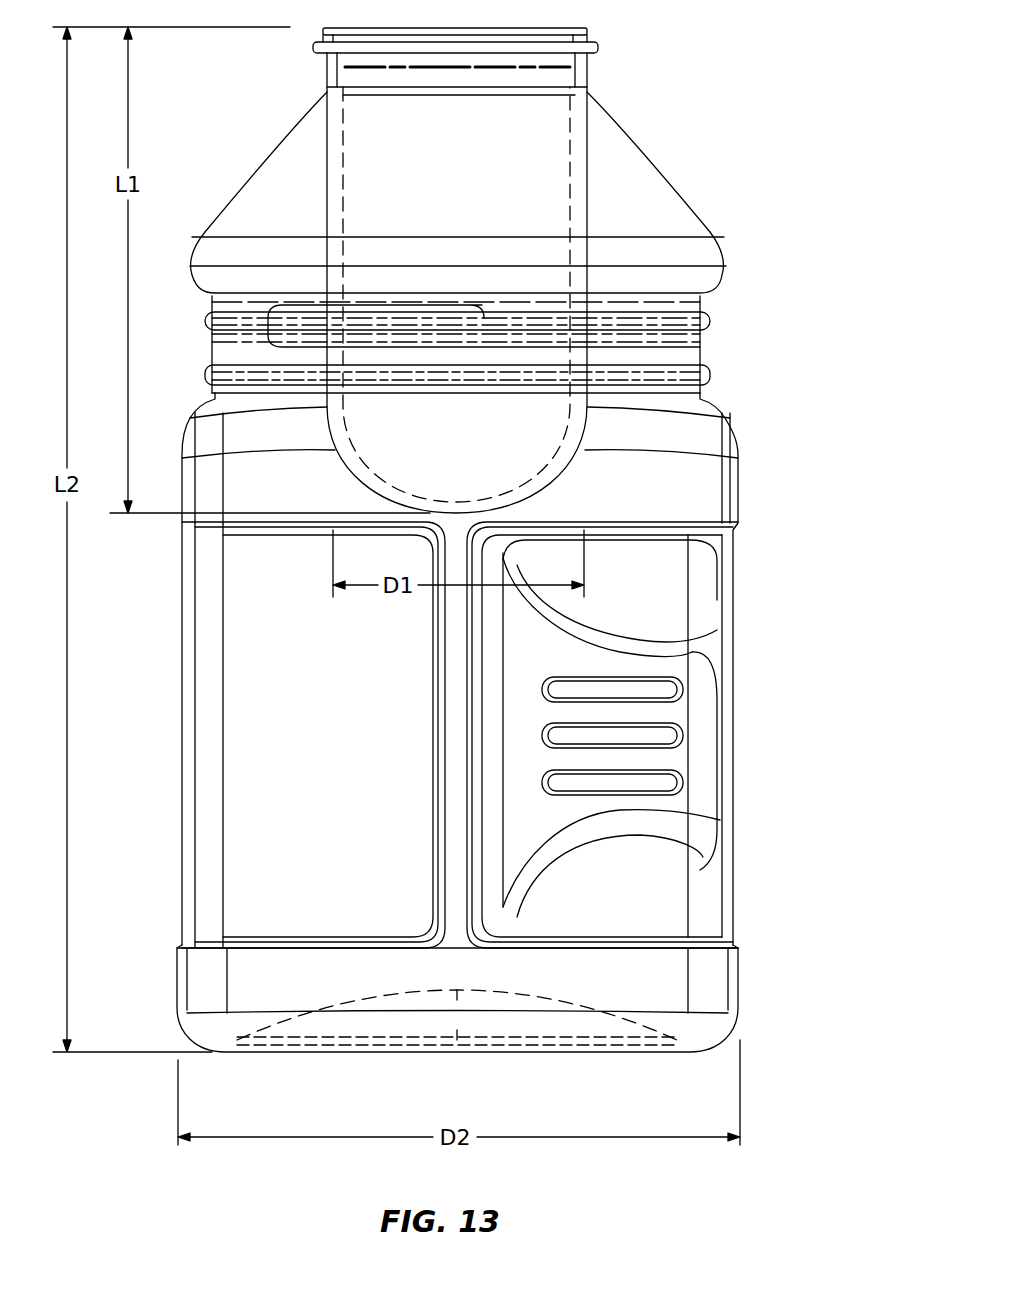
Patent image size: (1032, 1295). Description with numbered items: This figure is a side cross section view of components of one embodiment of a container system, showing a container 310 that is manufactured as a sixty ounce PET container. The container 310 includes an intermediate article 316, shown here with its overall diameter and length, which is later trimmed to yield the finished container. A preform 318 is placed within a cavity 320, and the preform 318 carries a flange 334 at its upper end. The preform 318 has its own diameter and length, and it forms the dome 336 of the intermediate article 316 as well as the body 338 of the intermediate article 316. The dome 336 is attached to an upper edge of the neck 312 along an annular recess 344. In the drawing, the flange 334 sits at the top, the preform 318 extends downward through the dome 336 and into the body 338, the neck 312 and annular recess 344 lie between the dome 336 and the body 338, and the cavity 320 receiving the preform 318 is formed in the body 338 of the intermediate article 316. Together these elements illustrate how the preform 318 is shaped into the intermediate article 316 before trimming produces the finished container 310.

The container 310 is at (854, 86).
The flange 334 is at (600, 47).
The preform 318 is at (588, 135).
The dome 336 is at (273, 193).
The annular recess 344 is at (696, 310).
The neck 312 is at (696, 321).
The body 338 is at (202, 690).
The cavity 320 is at (663, 593).
The intermediate article 316 is at (770, 743).